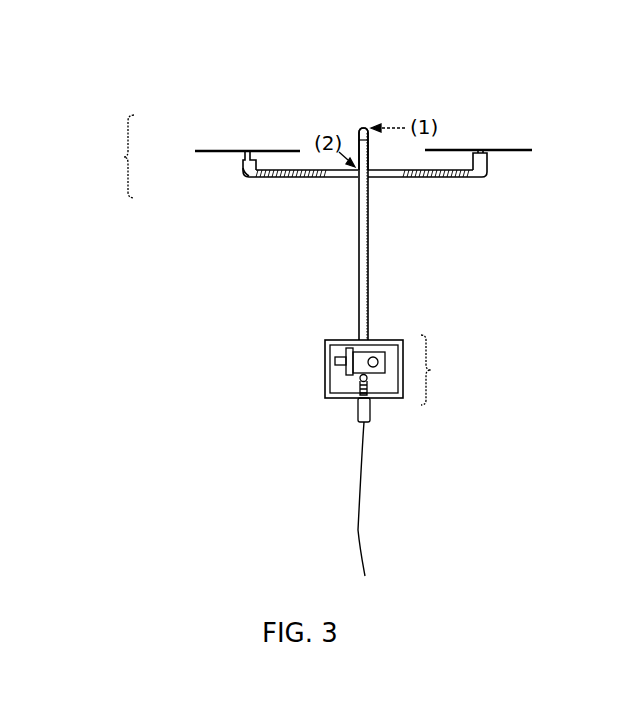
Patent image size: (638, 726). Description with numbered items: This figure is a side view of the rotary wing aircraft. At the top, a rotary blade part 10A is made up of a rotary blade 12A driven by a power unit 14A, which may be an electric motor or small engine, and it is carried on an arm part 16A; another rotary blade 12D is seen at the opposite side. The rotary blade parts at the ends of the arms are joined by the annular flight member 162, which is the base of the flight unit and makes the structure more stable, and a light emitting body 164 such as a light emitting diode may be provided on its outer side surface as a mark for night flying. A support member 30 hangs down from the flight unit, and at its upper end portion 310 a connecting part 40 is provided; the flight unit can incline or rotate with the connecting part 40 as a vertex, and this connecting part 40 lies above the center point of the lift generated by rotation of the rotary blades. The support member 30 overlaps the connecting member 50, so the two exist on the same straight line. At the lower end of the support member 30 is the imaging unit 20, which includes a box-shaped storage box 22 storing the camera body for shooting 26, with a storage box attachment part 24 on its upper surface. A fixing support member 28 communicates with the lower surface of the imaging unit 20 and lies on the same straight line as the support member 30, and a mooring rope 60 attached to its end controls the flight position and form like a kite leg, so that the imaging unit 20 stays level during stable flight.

The rotary blade part 10A is at (123, 157).
The rotary blade 12A is at (207, 149).
The rotary blade 12D is at (513, 148).
The power unit 14A is at (268, 171).
The arm part 16A is at (251, 176).
The light emitting body 164 is at (327, 185).
The flight member 162 is at (382, 178).
The support member 30 is at (369, 248).
The connecting part 40 is at (399, 122).
The upper end portion 310 is at (363, 124).
The connecting member 50 is at (358, 133).
The storage box 22 is at (384, 342).
The camera body for shooting 26 is at (360, 351).
The storage box attachment part 24 is at (358, 383).
The fixing support member 28 is at (357, 408).
The imaging unit 20 is at (432, 370).
The mooring rope 60 is at (359, 533).